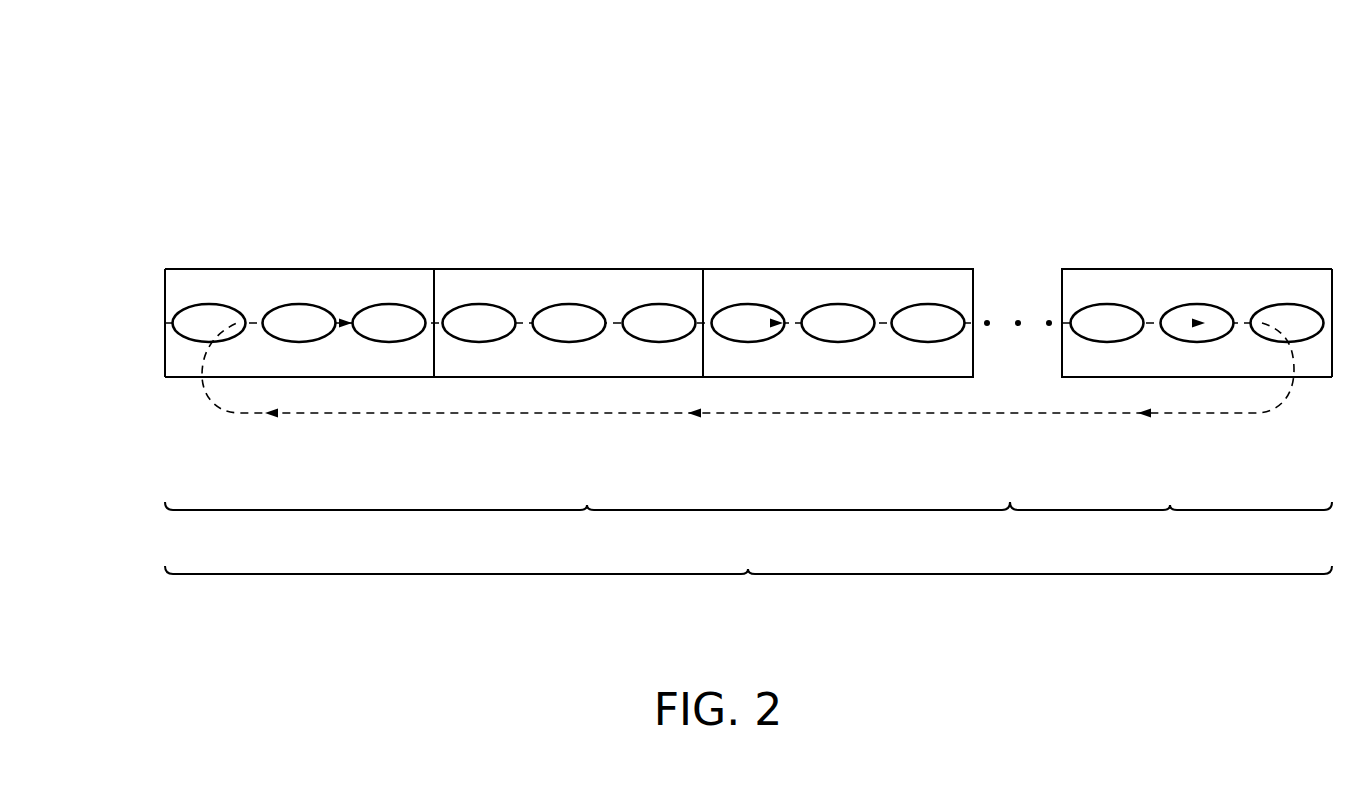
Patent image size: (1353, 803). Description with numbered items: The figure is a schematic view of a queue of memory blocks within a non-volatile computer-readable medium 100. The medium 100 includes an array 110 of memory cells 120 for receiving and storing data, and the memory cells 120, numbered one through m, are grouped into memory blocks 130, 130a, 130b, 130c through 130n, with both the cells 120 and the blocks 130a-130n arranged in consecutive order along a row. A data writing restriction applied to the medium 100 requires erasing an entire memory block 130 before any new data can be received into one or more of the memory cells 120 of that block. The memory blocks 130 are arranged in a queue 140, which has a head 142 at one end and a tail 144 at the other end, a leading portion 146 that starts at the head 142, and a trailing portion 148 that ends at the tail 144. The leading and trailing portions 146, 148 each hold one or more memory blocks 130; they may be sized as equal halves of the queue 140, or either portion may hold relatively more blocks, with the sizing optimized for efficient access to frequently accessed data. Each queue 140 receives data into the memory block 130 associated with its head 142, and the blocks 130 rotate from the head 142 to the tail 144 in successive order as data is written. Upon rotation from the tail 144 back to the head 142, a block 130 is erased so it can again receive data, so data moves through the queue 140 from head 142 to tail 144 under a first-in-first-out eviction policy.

The non-volatile computer-readable medium 100 is at (1022, 80).
The array 110 is at (148, 287).
The memory cells 120 is at (500, 338).
The memory blocks 130 is at (746, 316).
The memory block 130a is at (297, 265).
The memory block 130b is at (568, 333).
The memory block 130c is at (833, 268).
The memory block 130n is at (1197, 265).
The queue 140 is at (748, 589).
The head 142 is at (172, 215).
The tail 144 is at (1320, 215).
The leading portion 146 is at (587, 525).
The trailing portion 148 is at (1171, 525).